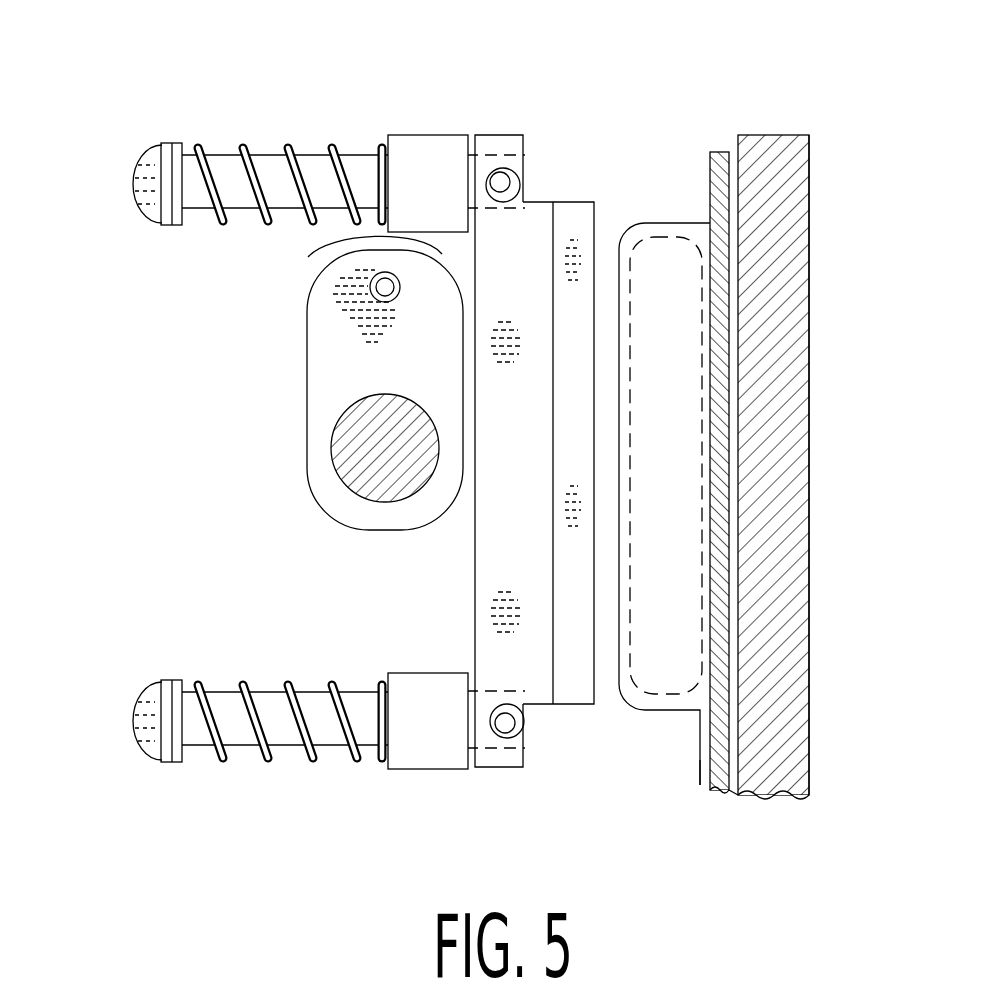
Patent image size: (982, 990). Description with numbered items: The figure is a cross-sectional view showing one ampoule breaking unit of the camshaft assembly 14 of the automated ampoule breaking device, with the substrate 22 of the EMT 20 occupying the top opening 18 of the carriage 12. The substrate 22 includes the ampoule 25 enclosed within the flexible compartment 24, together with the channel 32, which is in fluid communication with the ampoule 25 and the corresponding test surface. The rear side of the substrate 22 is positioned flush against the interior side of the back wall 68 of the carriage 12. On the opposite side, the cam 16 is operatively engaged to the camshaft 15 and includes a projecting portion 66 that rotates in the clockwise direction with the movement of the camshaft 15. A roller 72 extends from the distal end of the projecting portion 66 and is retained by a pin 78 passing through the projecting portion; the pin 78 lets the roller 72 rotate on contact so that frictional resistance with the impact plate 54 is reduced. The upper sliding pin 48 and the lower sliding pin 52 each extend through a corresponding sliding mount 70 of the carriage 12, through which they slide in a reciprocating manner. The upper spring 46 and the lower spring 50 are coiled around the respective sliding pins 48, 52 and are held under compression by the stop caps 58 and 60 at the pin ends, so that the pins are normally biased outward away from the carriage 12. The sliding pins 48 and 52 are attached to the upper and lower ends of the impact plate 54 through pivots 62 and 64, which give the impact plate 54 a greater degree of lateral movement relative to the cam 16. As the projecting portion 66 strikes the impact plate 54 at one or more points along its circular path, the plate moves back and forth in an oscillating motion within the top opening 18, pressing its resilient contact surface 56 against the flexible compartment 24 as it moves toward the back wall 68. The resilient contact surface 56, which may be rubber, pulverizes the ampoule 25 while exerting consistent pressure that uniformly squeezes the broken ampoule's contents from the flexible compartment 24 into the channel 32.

The carriage 12 is at (778, 130).
The camshaft assembly 14 is at (118, 507).
The camshaft 15 is at (378, 482).
The cam 16 is at (332, 403).
The top opening 18 is at (636, 407).
The EMT 20 is at (728, 800).
The substrate 22 is at (718, 150).
The flexible compartment 24 is at (662, 712).
The ampoule 25 is at (623, 706).
The channel 32 is at (700, 782).
The upper spring 46 is at (217, 137).
The upper sliding pin 48 is at (268, 172).
The lower spring 50 is at (238, 766).
The lower sliding pin 52 is at (290, 740).
The impact plate 54 is at (475, 560).
The resilient contact surface 56 is at (580, 216).
The stop cap 58 is at (135, 183).
The stop cap 60 is at (135, 720).
The pivot 62 is at (500, 172).
The pivot 64 is at (505, 735).
The projecting portion 66 is at (308, 292).
The back wall 68 is at (810, 402).
The sliding mount 70 is at (415, 135).
The roller 72 is at (330, 238).
The pin 78 is at (373, 300).